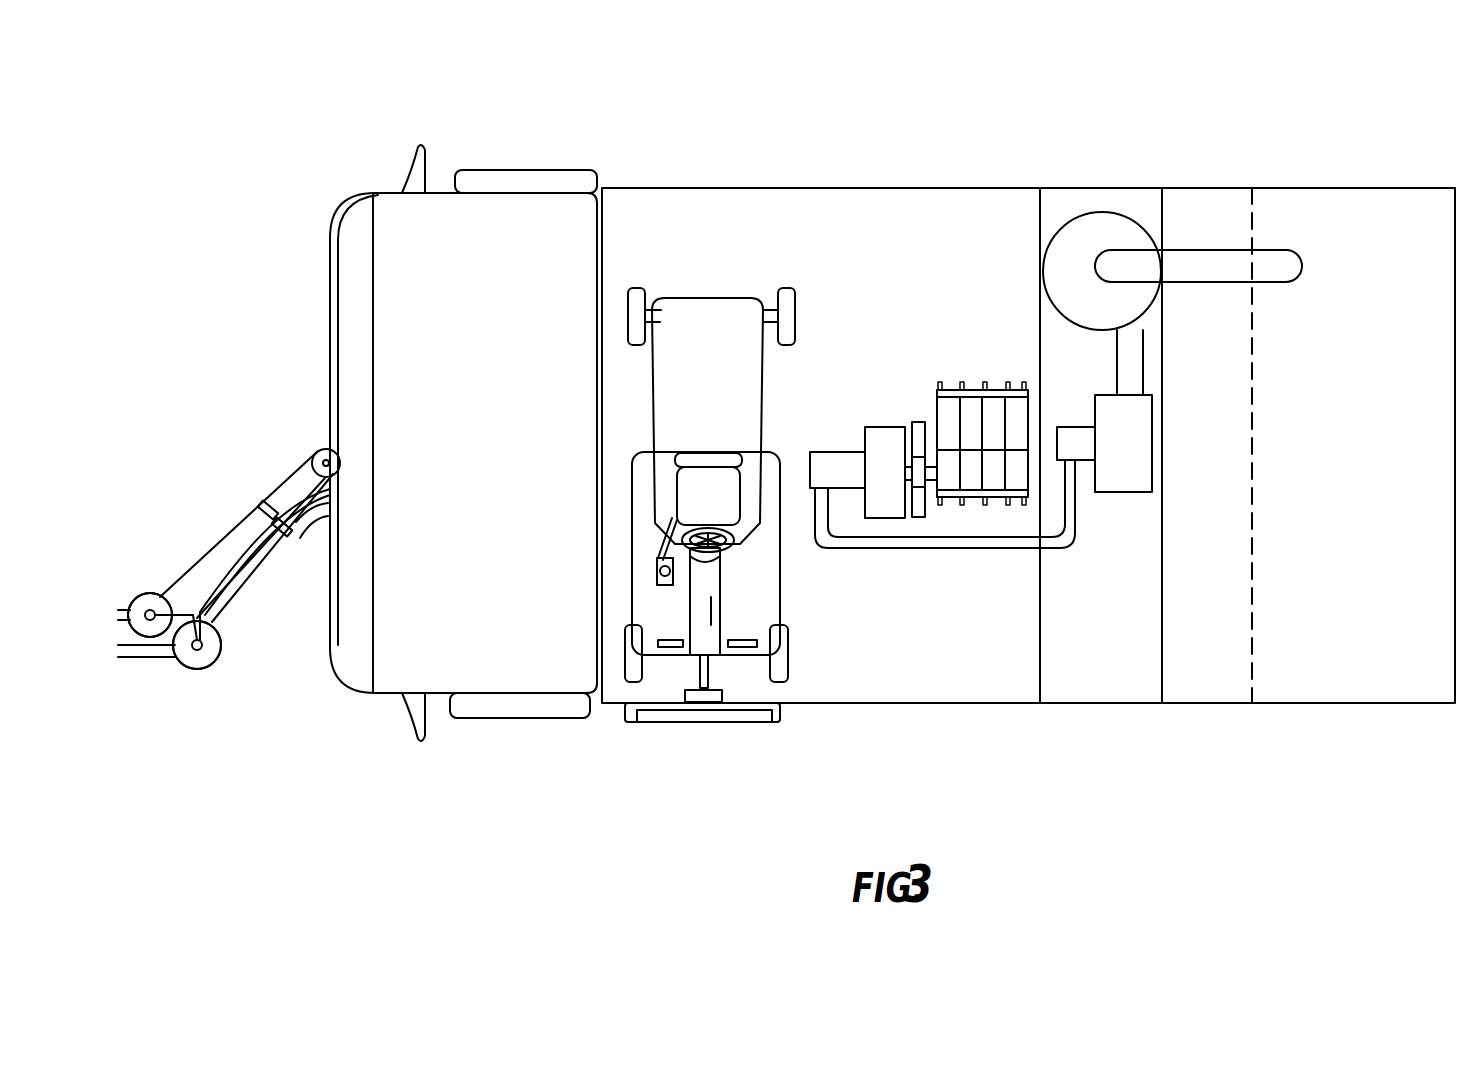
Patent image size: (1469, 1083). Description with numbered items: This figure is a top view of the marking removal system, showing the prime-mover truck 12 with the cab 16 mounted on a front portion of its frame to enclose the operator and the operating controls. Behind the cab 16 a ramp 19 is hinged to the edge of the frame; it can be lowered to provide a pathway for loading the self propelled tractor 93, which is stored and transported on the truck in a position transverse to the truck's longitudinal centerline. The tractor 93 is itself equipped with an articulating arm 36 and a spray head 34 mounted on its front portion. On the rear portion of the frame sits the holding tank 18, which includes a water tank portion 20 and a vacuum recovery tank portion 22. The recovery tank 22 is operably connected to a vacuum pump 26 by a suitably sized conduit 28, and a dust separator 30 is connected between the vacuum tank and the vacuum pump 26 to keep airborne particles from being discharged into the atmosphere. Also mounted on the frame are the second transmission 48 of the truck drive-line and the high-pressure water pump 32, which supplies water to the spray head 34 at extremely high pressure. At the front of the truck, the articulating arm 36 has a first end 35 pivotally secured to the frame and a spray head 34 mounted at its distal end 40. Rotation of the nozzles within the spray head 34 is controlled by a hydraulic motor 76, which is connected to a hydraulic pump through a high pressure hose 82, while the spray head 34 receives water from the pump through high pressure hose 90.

The prime-mover truck 12 is at (458, 416).
The cab 16 is at (523, 416).
The holding tank 18 is at (1028, 406).
The ramp 19 is at (702, 749).
The water tank portion 20 is at (1111, 404).
The vacuum recovery tank portion 22 is at (1272, 399).
The vacuum pump 26 is at (1104, 581).
The conduit 28 is at (1198, 202).
The dust separator 30 is at (1102, 260).
The high-pressure water pump 32 is at (982, 310).
The spray head 34 is at (430, 696).
The first end 35 is at (313, 429).
The articulating arm 36 is at (462, 556).
The distal end 40 is at (251, 564).
The second transmission 48 is at (942, 345).
The hydraulic motor 76 is at (235, 664).
The high pressure hose 82 is at (221, 621).
The high pressure hose 90 is at (150, 578).
The self propelled tractor 93 is at (710, 396).